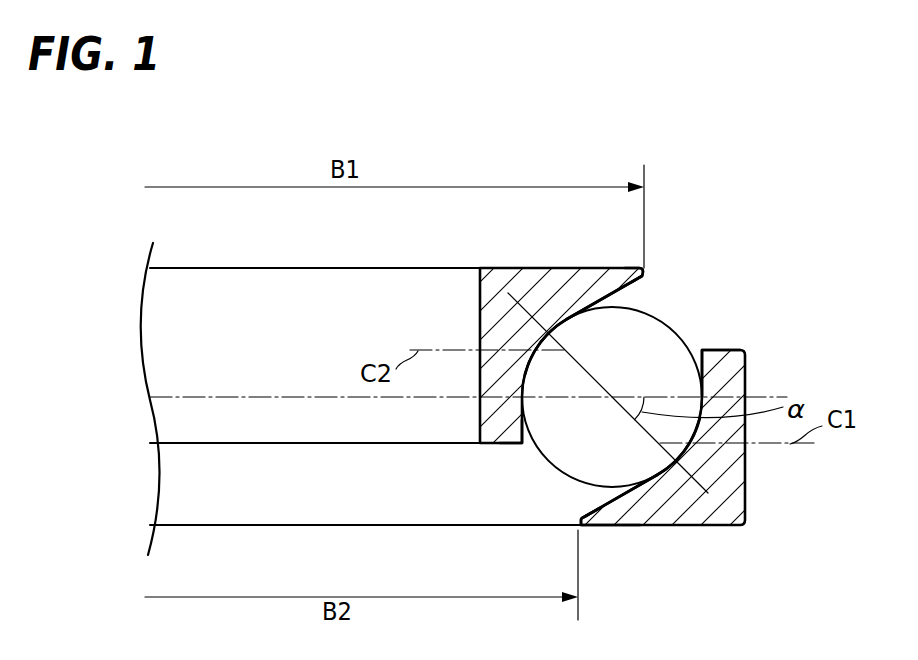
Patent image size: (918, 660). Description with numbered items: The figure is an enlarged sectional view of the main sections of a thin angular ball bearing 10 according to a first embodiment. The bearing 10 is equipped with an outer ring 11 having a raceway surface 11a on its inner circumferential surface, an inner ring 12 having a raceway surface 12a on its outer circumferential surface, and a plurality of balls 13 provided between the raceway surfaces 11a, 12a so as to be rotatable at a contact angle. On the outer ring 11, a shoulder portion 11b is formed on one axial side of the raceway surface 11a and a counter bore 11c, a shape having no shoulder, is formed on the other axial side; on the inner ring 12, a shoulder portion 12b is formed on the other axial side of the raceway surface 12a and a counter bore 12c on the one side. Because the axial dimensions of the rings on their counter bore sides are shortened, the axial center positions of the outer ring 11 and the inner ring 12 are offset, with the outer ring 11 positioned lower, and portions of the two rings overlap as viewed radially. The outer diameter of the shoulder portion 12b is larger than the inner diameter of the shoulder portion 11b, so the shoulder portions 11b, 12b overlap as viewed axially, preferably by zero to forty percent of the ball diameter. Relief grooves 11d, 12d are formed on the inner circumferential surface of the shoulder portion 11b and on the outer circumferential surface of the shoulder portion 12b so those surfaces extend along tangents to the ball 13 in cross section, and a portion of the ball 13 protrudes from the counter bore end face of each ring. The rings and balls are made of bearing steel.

The angular ball bearing 10 is at (728, 237).
The outer ring 11 is at (730, 470).
The raceway surface 11a is at (683, 485).
The shoulder portion 11b is at (615, 520).
The counter bore 11c is at (703, 345).
The relief groove 11d is at (597, 508).
The inner ring 12 is at (492, 315).
The raceway surface 12a is at (578, 328).
The shoulder portion 12b is at (598, 285).
The counter bore 12c is at (530, 443).
The relief groove 12d is at (653, 278).
The ball 13 is at (652, 342).